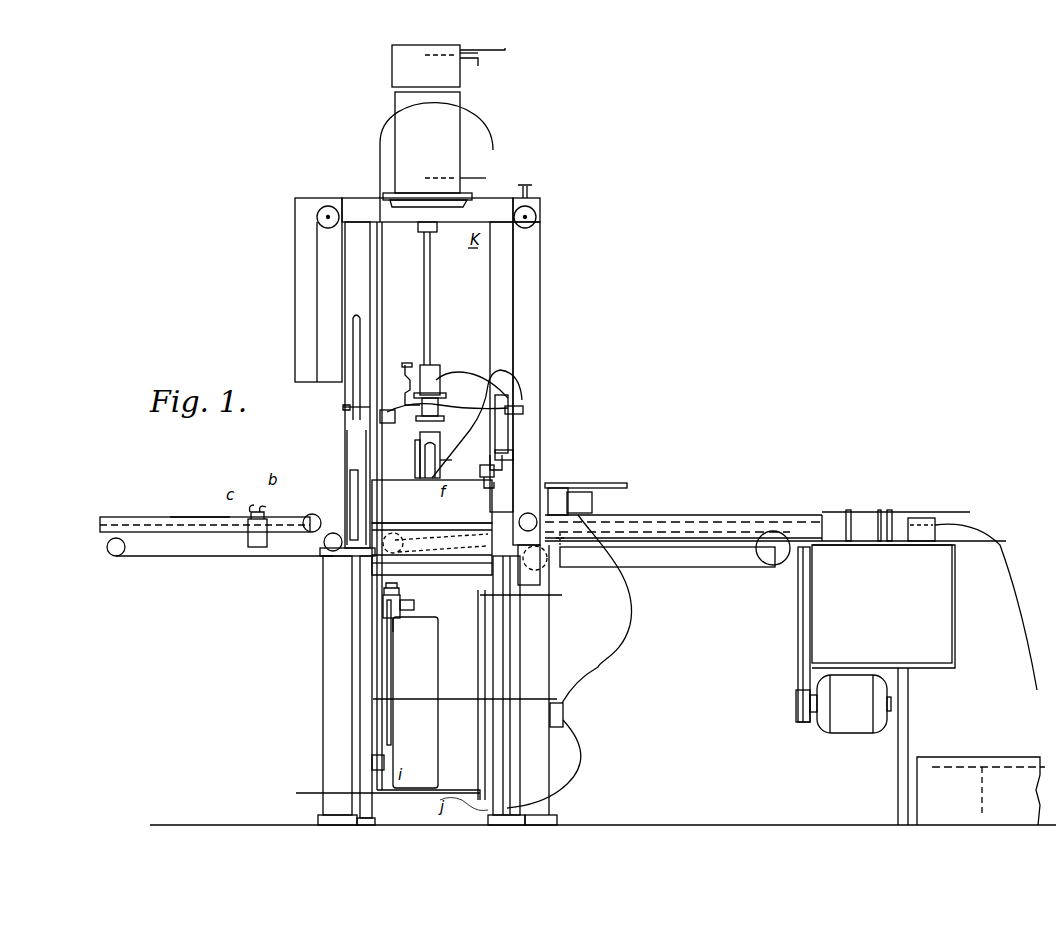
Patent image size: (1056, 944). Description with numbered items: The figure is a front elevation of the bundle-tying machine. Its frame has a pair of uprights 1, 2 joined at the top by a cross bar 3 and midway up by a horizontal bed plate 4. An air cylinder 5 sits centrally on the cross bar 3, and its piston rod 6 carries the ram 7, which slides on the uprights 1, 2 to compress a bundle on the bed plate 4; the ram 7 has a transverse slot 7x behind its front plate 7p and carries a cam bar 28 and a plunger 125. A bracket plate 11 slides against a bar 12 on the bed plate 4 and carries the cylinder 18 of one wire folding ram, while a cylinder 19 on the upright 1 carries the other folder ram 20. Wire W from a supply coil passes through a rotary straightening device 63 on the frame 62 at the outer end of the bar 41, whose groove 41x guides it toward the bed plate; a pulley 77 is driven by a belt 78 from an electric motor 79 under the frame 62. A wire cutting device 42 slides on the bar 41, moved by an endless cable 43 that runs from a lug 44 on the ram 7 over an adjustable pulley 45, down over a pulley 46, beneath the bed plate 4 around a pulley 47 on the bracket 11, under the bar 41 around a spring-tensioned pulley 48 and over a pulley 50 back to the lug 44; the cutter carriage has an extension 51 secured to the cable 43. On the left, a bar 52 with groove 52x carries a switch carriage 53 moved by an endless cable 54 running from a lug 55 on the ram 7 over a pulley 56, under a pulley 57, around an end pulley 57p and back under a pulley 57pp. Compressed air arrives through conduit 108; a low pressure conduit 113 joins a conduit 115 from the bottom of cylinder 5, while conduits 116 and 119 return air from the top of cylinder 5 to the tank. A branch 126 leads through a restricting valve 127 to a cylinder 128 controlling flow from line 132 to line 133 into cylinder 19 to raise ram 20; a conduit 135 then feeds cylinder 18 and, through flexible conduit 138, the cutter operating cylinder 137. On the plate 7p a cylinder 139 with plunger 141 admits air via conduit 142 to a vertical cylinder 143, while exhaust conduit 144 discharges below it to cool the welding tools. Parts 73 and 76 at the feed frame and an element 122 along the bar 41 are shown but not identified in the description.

The upright 1 is at (350, 290).
The upright 2 is at (492, 275).
The cross bar 3 is at (360, 205).
The bed plate 4 is at (452, 520).
The air cylinder 5 is at (455, 166).
The piston rod 6 is at (431, 300).
The ram 7 is at (396, 400).
The vertical slot 7x is at (420, 460).
The front plate 7p is at (412, 467).
The bracket plate 11 is at (450, 557).
The bar 12 is at (407, 527).
The cylinder 18 is at (503, 672).
The cylinder 19 is at (360, 643).
The ram 20 is at (357, 556).
The cam bar 28 is at (348, 490).
The bar 41 is at (712, 515).
The groove 41x is at (670, 518).
The wire cutting device 42 is at (608, 483).
The endless cable 43 is at (541, 325).
The lug 44 is at (523, 410).
The pulley 45 is at (537, 216).
The pulley 46 is at (521, 516).
The pulley 47 is at (400, 551).
The pulley 48 is at (766, 566).
The pulley 50 is at (545, 565).
The extension 51 is at (563, 540).
The bar 52 is at (138, 516).
The groove 52x is at (168, 516).
The slidable carriage 53 is at (243, 514).
The endless cable 54 is at (210, 557).
The lug 55 is at (343, 407).
The pulley 56 is at (316, 217).
The pulley 57 is at (306, 515).
The end pulley 57p is at (118, 556).
The pulley 57pp is at (335, 551).
The frame 62 is at (957, 568).
The rotary wire straightening device 63 is at (930, 517).
The guide rod 73 is at (890, 509).
The guide rod 76 is at (849, 509).
The pulley 77 is at (797, 597).
The belt 78 is at (797, 647).
The electric motor 79 is at (850, 732).
The conduit 108 is at (383, 300).
The low pressure conduit 113 is at (472, 600).
The conduit 115 is at (488, 176).
The conduit 116 is at (480, 68).
The conduit 119 is at (506, 52).
The belt 122 is at (582, 528).
The plunger 125 is at (498, 482).
The branch 126 is at (438, 641).
The restricting valve 127 is at (414, 602).
The cylinder 128 is at (383, 606).
The branch line 132 is at (395, 622).
The line 133 is at (394, 683).
The conduit 135 is at (462, 700).
The operating cylinder 137 is at (592, 503).
The flexible conduit 138 is at (622, 640).
The cylinder 139 is at (505, 412).
The plunger 141 is at (502, 470).
The conduit 142 is at (460, 365).
The vertical cylinder 143 is at (470, 416).
The exhaust conduit 144 is at (488, 398).
The wire W is at (1005, 604).